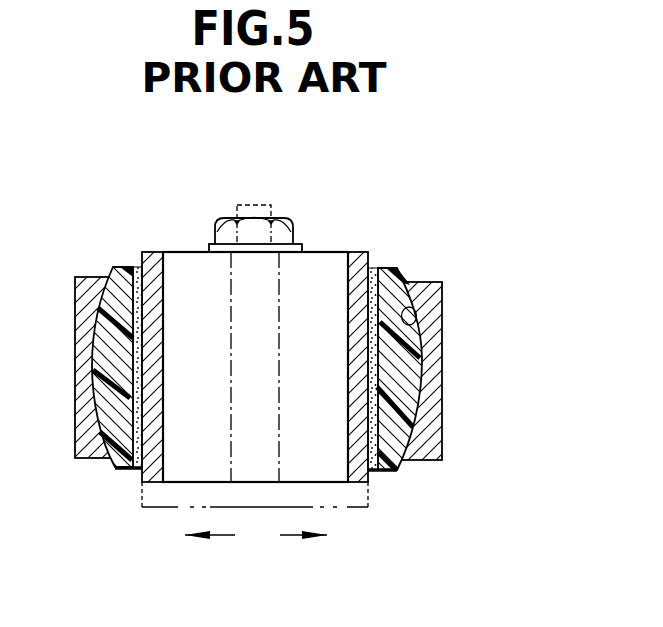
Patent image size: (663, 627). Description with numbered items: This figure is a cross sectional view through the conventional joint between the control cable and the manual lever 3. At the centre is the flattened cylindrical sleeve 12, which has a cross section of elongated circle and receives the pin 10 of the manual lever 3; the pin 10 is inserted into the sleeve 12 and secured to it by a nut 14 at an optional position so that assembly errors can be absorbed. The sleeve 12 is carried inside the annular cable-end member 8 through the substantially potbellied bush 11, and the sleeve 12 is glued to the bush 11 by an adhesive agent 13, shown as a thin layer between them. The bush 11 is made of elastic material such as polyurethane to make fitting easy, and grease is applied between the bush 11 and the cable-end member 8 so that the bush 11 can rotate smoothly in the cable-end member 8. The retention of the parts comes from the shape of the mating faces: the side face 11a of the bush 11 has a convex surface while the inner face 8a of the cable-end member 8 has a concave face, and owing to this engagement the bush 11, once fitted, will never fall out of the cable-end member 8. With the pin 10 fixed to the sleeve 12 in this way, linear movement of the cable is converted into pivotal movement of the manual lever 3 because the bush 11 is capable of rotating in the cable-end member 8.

The manual lever 3 is at (255, 508).
The cable-end member 8 is at (442, 397).
The inner face 8a is at (417, 314).
The pin 10 is at (280, 280).
The bush 11 is at (388, 272).
The side face 11a is at (418, 433).
The sleeve 12 is at (153, 251).
The adhesive agent 13 is at (133, 469).
The nut 14 is at (297, 231).